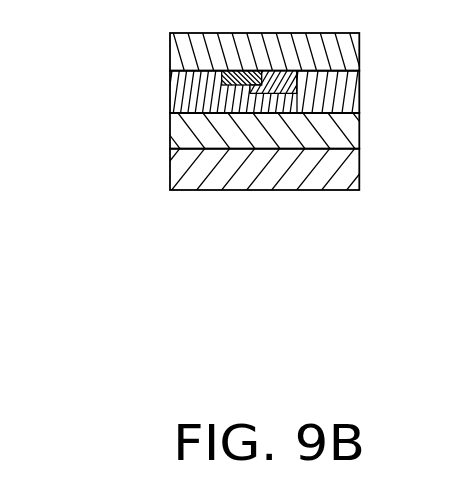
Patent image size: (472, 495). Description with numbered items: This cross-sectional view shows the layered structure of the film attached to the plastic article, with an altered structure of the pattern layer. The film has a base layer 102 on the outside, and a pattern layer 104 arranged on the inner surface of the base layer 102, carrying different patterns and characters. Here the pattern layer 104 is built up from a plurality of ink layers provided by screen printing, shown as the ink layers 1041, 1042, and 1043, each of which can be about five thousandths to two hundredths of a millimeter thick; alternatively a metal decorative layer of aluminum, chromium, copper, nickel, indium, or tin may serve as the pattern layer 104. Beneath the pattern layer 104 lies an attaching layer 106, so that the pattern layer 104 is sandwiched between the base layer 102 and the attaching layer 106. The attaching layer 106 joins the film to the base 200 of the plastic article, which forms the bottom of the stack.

The base layer 102 is at (332, 56).
The pattern layer 104 is at (191, 95).
The ink layer 1041 is at (222, 84).
The ink layer 1042 is at (252, 94).
The ink layer 1043 is at (183, 103).
The attaching layer 106 is at (355, 128).
The base 200 is at (332, 167).